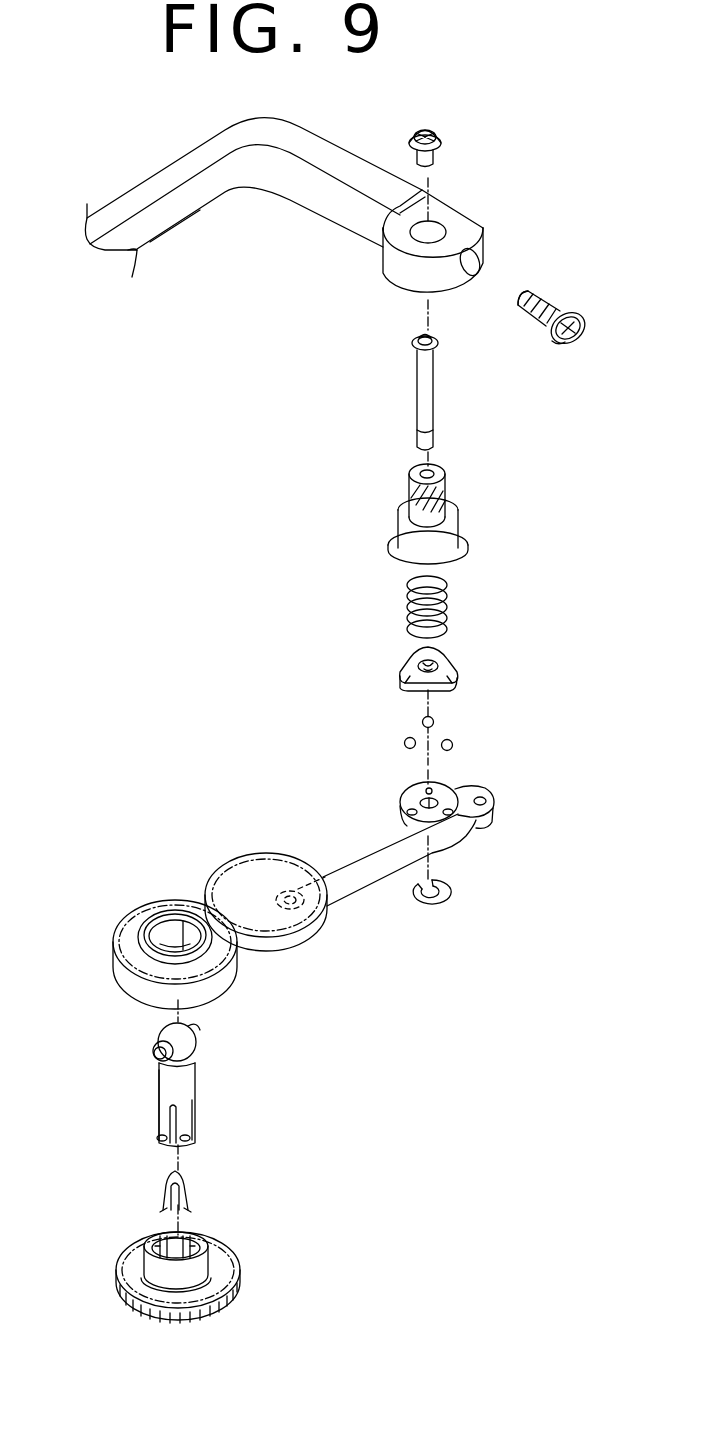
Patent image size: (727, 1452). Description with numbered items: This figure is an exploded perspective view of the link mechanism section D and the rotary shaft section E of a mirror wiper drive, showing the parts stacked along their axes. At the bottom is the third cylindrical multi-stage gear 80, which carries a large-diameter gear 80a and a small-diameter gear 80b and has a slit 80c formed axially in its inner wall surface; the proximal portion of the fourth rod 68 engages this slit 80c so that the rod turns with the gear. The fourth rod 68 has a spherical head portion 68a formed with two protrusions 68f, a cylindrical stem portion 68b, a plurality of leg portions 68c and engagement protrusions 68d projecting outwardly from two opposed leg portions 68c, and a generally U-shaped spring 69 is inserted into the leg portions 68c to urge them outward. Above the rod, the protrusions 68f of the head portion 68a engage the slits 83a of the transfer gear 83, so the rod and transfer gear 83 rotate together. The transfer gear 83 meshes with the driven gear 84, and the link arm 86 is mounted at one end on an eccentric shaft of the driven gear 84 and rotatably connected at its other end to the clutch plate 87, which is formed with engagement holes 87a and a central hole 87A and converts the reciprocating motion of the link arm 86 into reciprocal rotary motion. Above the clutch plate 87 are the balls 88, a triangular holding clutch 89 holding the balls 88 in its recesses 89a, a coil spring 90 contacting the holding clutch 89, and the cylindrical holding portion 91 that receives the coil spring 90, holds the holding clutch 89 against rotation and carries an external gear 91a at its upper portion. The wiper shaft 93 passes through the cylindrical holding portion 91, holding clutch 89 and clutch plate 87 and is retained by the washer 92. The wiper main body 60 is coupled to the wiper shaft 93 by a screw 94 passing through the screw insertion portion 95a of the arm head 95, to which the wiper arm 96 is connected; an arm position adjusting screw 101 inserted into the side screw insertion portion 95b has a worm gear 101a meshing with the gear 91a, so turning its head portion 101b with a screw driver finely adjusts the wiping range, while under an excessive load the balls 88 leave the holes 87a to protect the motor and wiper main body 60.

The wiper main body 60 is at (133, 187).
The wiper arm 96 is at (168, 216).
The screw 94 is at (441, 138).
The arm head 95 is at (483, 222).
The screw insertion portion 95a is at (440, 221).
The screw insertion portion 95b is at (479, 262).
The arm position adjusting screw 101 is at (572, 318).
The worm gear 101a is at (540, 301).
The head portion 101b is at (558, 345).
The wiper shaft 93 is at (435, 386).
The cylindrical holding portion 91 is at (459, 513).
The external gear 91a is at (408, 489).
The coil spring 90 is at (406, 599).
The rotary shaft section E is at (462, 588).
The holding clutch 89 is at (458, 668).
The recesses 89a is at (447, 656).
The balls 88 is at (408, 737).
The clutch plate 87 is at (455, 796).
The center hole 87A is at (427, 789).
The engagement holes 87a is at (409, 816).
The washer 92 is at (448, 896).
The link arm 86 is at (352, 895).
The driven gear 84 is at (236, 876).
The link mechanism section D is at (207, 862).
The transfer gear 83 is at (228, 978).
The slits 83a is at (192, 921).
The fourth rod 68 is at (199, 1086).
The head portion 68a is at (162, 1031).
The protrusions 68f is at (197, 1029).
The stem portion 68b is at (158, 1088).
The leg portions 68c is at (188, 1108).
The engagement protrusions 68d is at (160, 1140).
The spring 69 is at (190, 1183).
The third cylindrical multi-stage gear 80 is at (222, 1265).
The large-diameter gear 80a is at (232, 1292).
The small-diameter gear 80b is at (160, 1272).
The slit 80c is at (150, 1236).